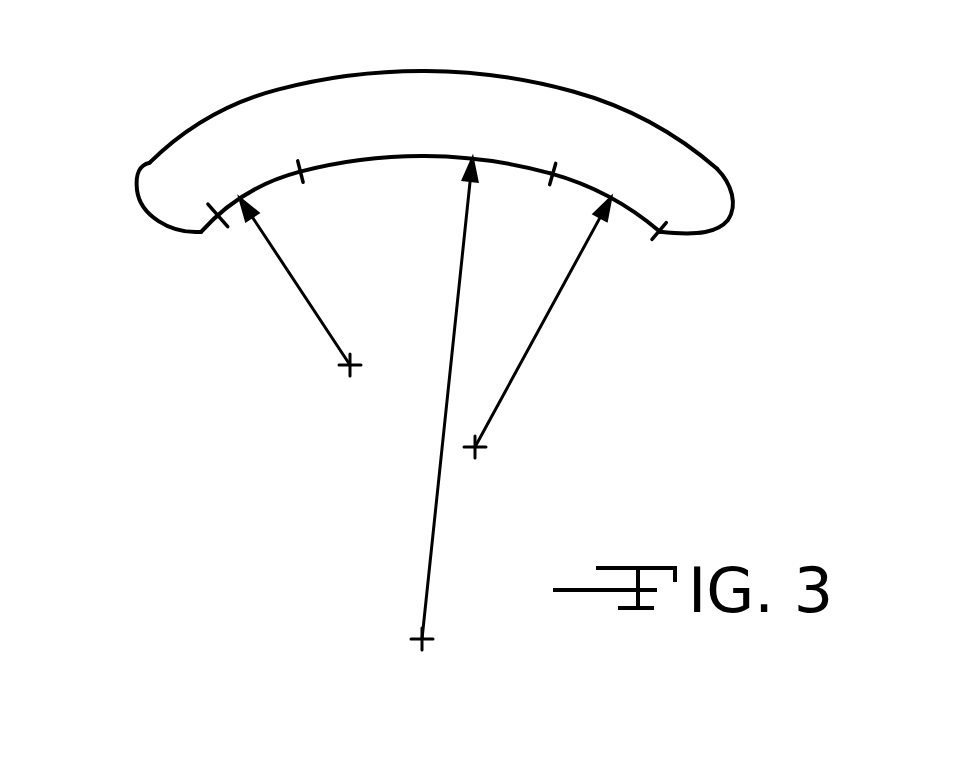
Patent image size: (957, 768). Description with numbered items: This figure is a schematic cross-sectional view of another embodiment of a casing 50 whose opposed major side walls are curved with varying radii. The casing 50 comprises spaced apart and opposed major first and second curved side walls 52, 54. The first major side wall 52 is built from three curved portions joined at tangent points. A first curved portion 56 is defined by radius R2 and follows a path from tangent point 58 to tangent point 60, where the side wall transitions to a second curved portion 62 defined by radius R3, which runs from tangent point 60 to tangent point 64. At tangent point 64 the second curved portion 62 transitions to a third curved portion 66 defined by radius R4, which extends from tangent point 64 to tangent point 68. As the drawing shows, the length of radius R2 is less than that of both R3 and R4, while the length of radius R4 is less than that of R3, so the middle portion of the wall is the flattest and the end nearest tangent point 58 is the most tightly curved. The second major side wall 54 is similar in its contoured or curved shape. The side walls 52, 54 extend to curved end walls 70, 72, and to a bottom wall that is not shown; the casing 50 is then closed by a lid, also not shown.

The casing 50 is at (456, 171).
The first major curved side wall 52 is at (438, 225).
The second major curved side wall 54 is at (636, 113).
The first curved portion 56 is at (272, 182).
The tangent point 58 is at (215, 200).
The tangent point 60 is at (303, 168).
The second curved portion 62 is at (436, 158).
The tangent point 64 is at (548, 168).
The third curved portion 66 is at (577, 183).
The tangent point 68 is at (668, 236).
The curved end wall 70 is at (722, 212).
The curved end wall 72 is at (153, 217).
The radius of first curved portion R2 is at (307, 305).
The radius of second curved portion R3 is at (458, 283).
The radius of third curved portion R4 is at (523, 364).